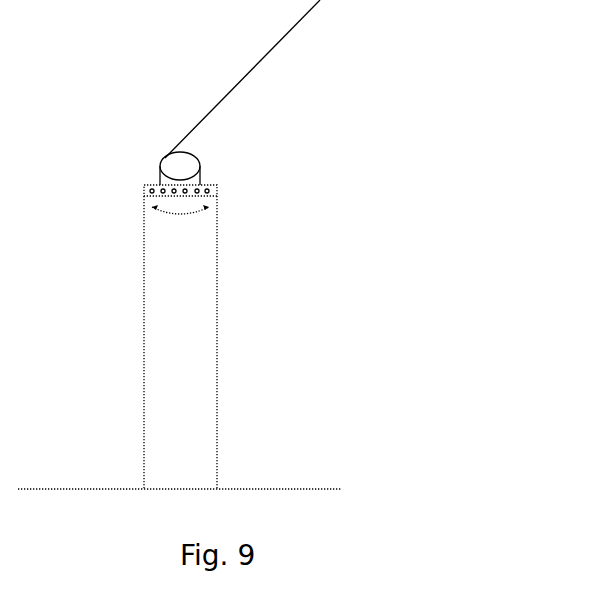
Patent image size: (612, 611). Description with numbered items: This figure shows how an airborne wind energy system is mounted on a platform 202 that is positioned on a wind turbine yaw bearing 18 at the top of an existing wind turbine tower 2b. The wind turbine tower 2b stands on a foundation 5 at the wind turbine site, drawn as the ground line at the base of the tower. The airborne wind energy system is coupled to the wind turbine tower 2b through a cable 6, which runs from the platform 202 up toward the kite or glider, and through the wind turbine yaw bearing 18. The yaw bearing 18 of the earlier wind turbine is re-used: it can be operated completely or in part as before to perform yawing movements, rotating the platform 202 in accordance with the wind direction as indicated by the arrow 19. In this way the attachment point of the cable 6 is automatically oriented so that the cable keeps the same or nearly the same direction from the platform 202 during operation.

The cable 6 is at (247, 70).
The platform 202 is at (163, 188).
The wind turbine yaw bearing 18 is at (147, 192).
The arrow 19 is at (188, 212).
The wind turbine tower 2b is at (188, 385).
The foundation 5 is at (232, 505).